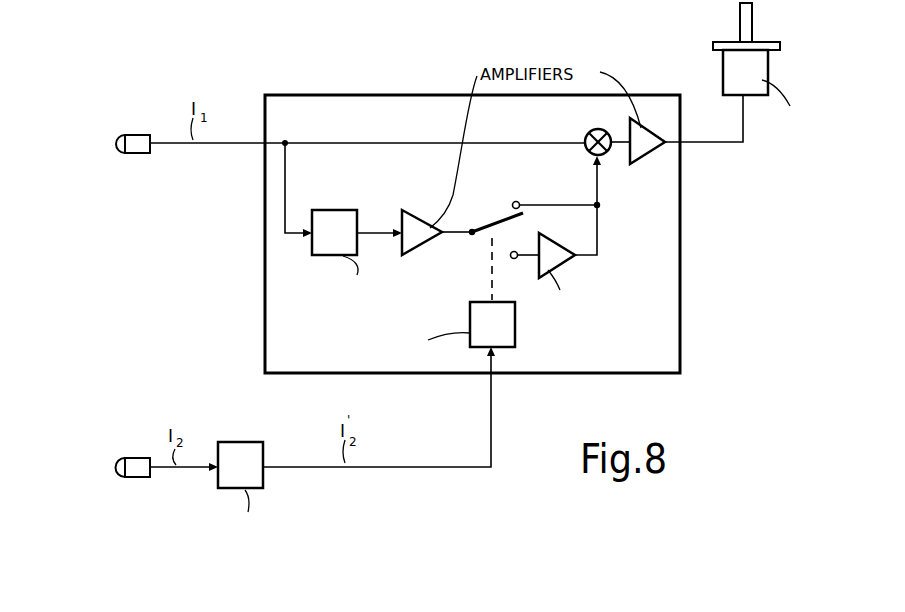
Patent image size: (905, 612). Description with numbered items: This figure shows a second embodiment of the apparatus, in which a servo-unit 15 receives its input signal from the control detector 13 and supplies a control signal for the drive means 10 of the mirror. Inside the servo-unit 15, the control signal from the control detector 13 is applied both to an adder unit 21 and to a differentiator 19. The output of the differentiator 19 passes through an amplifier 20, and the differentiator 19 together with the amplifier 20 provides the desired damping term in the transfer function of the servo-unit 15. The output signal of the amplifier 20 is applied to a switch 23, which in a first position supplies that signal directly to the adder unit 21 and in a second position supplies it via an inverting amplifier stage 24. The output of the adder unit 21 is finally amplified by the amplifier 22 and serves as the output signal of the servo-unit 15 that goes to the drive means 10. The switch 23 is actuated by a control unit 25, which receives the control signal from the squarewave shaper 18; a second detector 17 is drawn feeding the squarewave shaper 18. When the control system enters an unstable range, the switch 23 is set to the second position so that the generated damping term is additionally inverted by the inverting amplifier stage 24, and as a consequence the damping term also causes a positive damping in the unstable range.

The drive means 10 is at (735, 74).
The control detector 13 is at (136, 140).
The servo-unit 15 is at (306, 94).
The detector 17 is at (136, 462).
The squarewave shaper 18 is at (247, 450).
The differentiator 19 is at (331, 218).
The amplifier 20 is at (414, 222).
The adder unit 21 is at (596, 130).
The amplifier 22 is at (645, 136).
The switch 23 is at (490, 225).
The inverting amplifier stage 24 is at (560, 247).
The control unit 25 is at (515, 326).